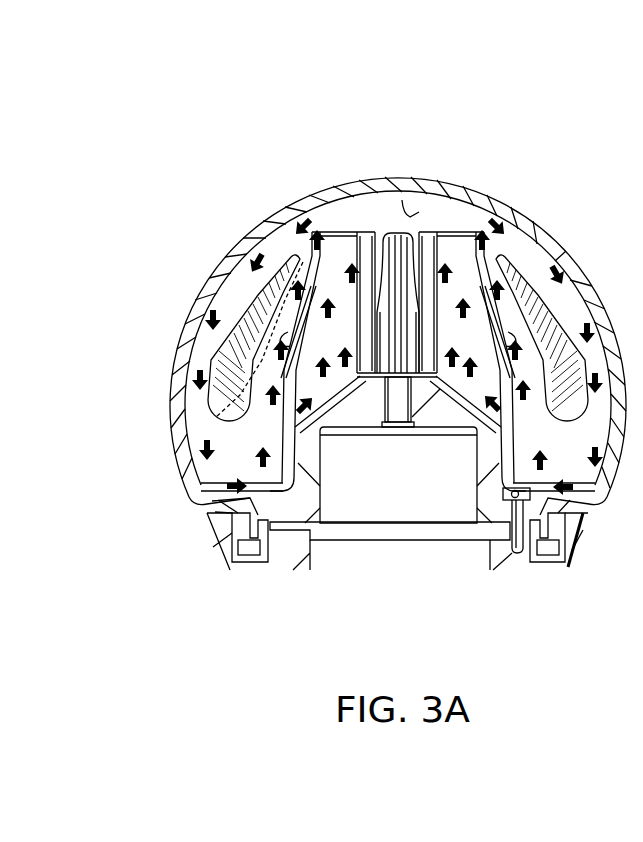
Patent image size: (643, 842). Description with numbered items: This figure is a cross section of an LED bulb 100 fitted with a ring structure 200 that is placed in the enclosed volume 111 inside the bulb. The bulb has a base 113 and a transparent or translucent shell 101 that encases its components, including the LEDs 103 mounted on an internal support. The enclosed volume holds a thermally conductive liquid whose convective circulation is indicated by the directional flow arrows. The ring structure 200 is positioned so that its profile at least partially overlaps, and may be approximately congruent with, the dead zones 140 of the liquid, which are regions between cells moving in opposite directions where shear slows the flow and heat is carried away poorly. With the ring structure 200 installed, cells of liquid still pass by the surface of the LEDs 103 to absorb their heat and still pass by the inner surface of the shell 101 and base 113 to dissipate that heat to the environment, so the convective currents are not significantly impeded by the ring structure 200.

The LED bulb 100 is at (574, 201).
The shell 101 is at (176, 463).
The LEDs 103 is at (500, 248).
The enclosed volume 111 is at (420, 205).
The base 113 is at (493, 570).
The dead zones 140 is at (245, 325).
The ring structure 200 is at (294, 262).